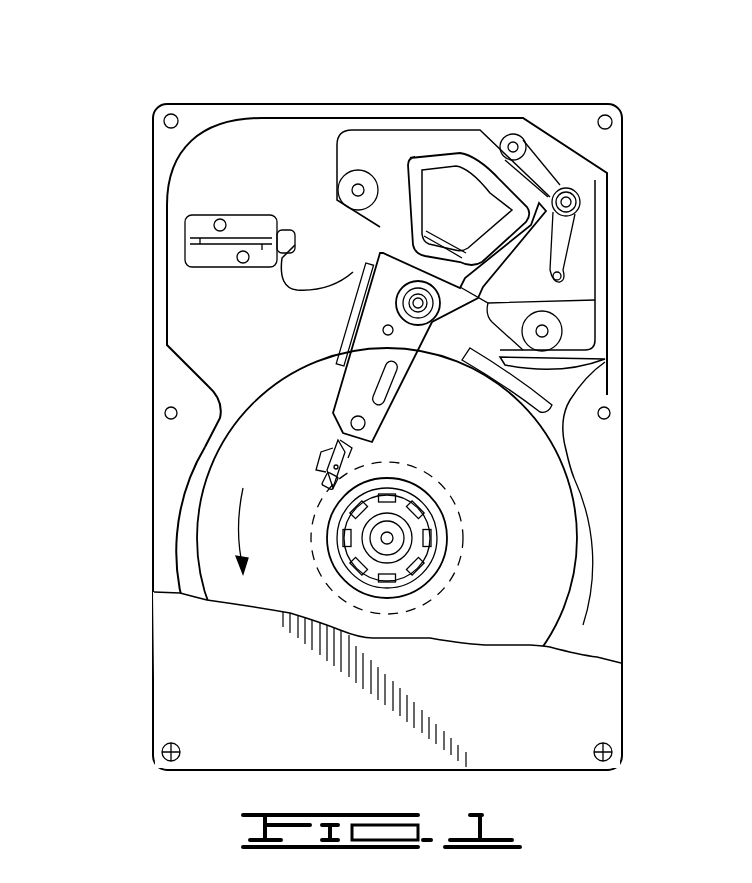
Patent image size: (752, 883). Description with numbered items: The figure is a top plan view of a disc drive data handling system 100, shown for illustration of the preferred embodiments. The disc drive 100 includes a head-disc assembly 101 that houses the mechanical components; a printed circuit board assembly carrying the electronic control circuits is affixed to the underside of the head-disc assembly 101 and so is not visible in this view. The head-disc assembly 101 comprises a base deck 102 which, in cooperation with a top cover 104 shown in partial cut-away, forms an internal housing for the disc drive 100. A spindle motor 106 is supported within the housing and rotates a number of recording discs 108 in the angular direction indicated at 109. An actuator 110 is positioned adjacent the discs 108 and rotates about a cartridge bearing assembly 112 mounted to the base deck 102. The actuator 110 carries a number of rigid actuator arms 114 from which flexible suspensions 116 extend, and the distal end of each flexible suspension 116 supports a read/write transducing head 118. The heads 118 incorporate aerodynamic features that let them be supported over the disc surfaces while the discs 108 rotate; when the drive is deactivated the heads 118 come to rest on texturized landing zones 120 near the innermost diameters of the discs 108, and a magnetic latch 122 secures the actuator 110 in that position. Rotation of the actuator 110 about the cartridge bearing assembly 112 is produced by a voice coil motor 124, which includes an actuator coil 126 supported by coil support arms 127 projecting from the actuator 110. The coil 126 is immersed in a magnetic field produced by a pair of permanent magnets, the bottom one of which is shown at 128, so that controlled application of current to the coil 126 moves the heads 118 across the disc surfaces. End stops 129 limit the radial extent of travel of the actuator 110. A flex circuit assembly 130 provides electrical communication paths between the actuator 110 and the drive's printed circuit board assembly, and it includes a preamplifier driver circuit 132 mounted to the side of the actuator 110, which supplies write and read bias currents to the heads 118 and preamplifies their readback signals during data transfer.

The disc drive data handling system 100 is at (162, 83).
The head-disc assembly 101 is at (218, 168).
The base deck 102 is at (193, 312).
The top cover 104 is at (188, 663).
The spindle motor 106 is at (415, 528).
The recording discs 108 is at (565, 550).
The angular direction 109 is at (250, 530).
The actuator 110 is at (439, 331).
The cartridge bearing assembly 112 is at (435, 305).
The rigid actuator arms 114 is at (388, 372).
The flexible suspensions 116 is at (335, 455).
The read/write transducing head 118 is at (330, 476).
The texturized landing zones 120 is at (452, 585).
The magnetic latch 122 is at (577, 238).
The voice coil motor 124 is at (460, 142).
The actuator coil 126 is at (430, 162).
The coil support arms 127 is at (400, 178).
The permanent magnet 128 is at (537, 290).
The end stops 129 is at (362, 183).
The flex circuit assembly 130 is at (290, 292).
The preamplifier driver circuit 132 is at (350, 296).